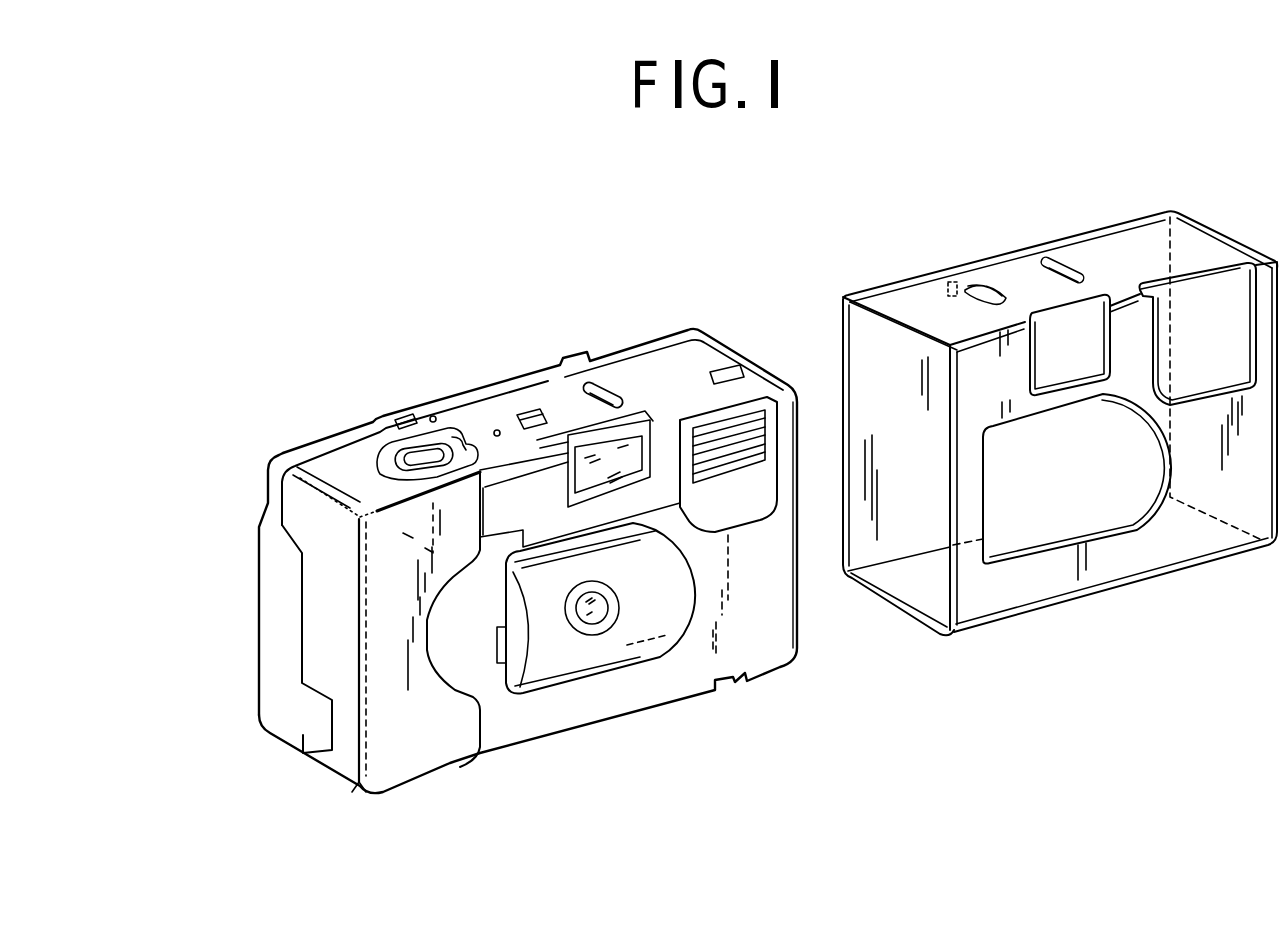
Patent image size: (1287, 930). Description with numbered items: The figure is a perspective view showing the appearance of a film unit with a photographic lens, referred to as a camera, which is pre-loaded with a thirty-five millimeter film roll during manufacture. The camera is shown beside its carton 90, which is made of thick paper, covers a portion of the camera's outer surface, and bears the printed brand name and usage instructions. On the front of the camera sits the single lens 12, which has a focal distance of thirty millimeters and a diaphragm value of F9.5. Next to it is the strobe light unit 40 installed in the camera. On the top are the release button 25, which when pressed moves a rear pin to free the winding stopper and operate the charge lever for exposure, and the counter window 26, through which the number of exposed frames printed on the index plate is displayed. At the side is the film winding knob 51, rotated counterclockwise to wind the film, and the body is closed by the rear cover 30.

The single lens 12 is at (596, 614).
The release button 25 is at (395, 464).
The counter window 26 is at (524, 411).
The rear cover 30 is at (255, 690).
The strobe light unit 40 is at (760, 400).
The film winding knob 51 is at (268, 455).
The carton 90 is at (990, 258).